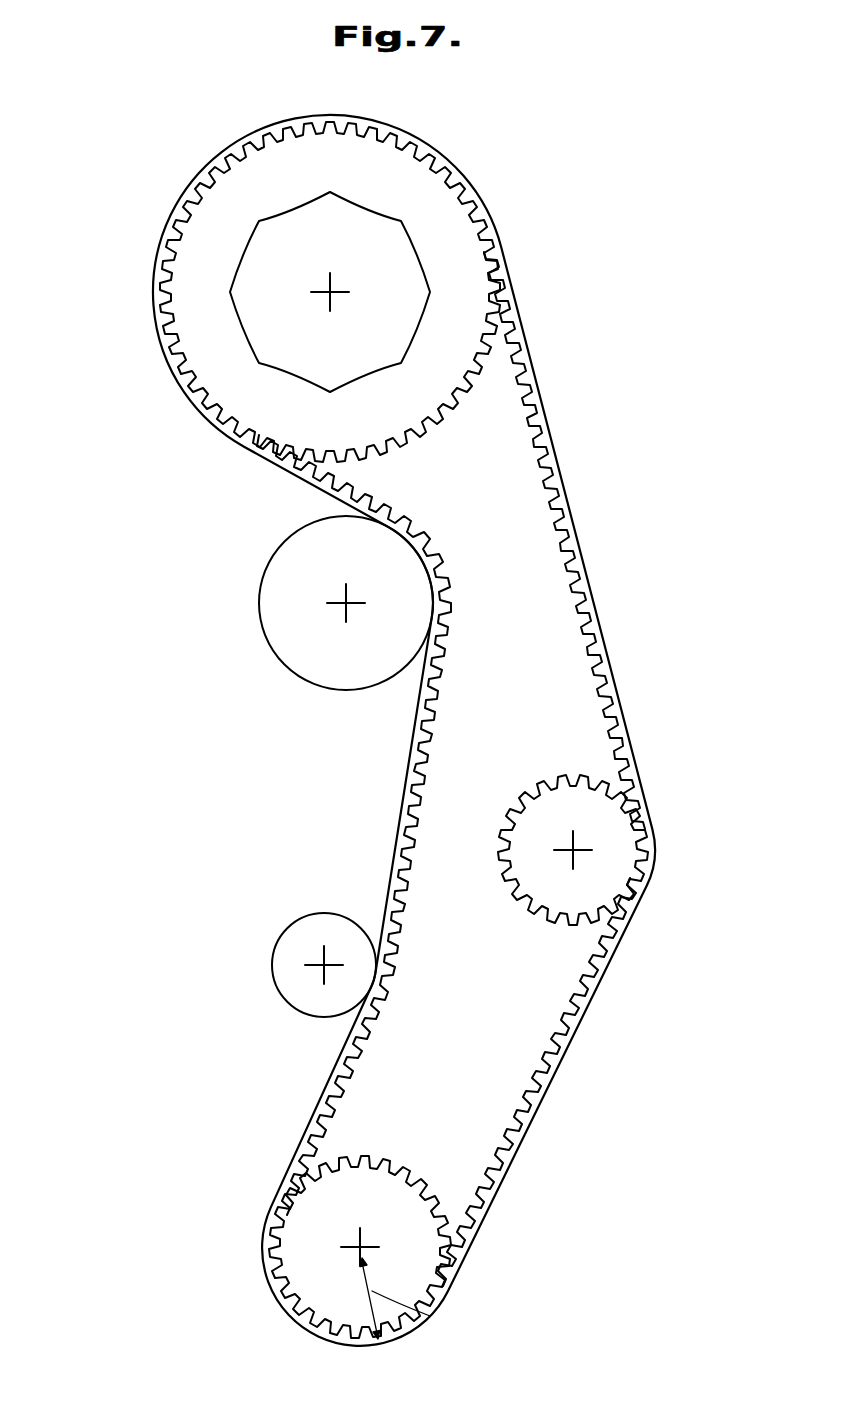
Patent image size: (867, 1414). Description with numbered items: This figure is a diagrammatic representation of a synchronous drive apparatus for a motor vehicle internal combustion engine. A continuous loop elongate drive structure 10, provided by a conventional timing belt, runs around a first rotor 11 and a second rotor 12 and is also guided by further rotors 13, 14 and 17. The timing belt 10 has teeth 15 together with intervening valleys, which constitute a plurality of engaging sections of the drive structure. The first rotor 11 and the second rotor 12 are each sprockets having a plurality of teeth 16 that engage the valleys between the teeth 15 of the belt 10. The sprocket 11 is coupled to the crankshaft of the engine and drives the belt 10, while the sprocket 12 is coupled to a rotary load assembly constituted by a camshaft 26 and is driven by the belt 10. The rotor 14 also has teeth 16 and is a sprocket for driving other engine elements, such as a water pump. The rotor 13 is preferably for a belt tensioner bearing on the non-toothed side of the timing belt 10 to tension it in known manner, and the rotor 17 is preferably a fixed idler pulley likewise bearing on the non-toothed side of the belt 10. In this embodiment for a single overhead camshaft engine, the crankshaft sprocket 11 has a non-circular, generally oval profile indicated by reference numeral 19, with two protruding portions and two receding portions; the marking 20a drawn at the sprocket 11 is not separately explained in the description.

The continuous loop elongate drive structure 10 is at (578, 498).
The first rotor 11 is at (305, 1270).
The second rotor 12 is at (198, 261).
The rotor 13 is at (280, 594).
The rotor 14 is at (552, 806).
The teeth 15 is at (542, 458).
The teeth 16 is at (359, 730).
The rotor 17 is at (302, 945).
The non-circular profile 19 is at (435, 1215).
The tooth flank 20a is at (430, 1316).
The camshaft 26 is at (402, 222).